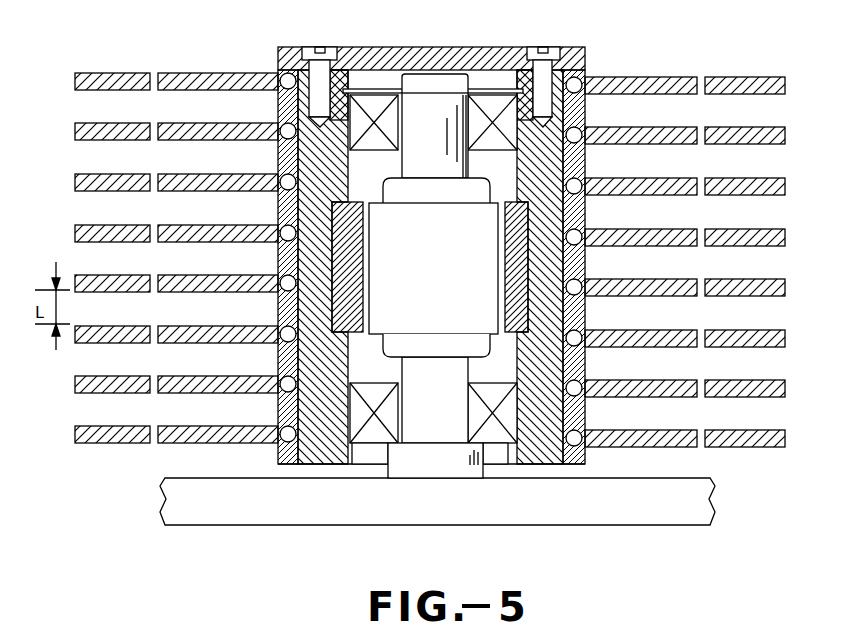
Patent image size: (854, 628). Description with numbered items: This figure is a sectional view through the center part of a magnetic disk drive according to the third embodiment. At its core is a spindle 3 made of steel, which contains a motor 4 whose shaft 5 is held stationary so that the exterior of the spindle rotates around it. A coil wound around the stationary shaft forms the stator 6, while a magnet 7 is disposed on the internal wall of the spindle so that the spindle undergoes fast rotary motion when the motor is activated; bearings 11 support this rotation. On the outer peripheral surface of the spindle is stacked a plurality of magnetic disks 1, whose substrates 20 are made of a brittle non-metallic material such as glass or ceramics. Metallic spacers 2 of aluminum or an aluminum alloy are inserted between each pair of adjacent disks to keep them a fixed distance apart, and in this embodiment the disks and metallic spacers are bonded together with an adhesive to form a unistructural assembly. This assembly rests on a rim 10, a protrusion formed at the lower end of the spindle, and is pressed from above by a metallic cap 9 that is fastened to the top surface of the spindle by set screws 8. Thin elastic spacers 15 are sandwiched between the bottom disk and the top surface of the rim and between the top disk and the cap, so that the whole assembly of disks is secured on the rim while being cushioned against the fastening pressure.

The magnetic disks 1 is at (790, 436).
The metallic spacers 2 is at (278, 436).
The spindle 3 is at (312, 464).
The motor 4 is at (378, 168).
The shaft 5 is at (433, 430).
The stator 6 is at (442, 320).
The magnet 7 is at (360, 272).
The set screws 8 is at (333, 47).
The cap 9 is at (443, 47).
The rim 10 is at (275, 447).
The bearings 11 is at (496, 103).
The elastic spacers 15 is at (278, 71).
The substrates 20 is at (109, 72).